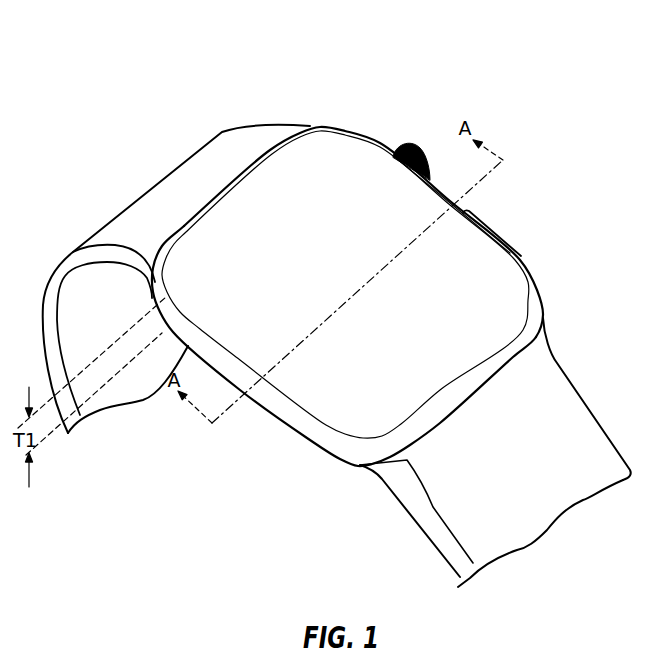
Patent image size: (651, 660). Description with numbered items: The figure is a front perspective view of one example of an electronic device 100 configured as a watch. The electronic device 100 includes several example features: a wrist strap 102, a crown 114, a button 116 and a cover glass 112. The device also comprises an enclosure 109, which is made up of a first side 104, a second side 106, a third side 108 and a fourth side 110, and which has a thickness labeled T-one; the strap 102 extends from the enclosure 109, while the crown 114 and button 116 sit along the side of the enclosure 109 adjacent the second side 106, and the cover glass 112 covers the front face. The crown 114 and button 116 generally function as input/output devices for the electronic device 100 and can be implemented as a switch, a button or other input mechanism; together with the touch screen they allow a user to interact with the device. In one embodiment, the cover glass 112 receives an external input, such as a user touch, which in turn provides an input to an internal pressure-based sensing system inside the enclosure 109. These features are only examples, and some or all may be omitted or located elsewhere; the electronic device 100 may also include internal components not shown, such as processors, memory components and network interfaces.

The electronic device 100 is at (337, 305).
The wrist strap 102 is at (263, 129).
The first side 104 is at (204, 193).
The second side 106 is at (451, 199).
The third side 108 is at (402, 458).
The enclosure 109 is at (544, 268).
The fourth side 110 is at (276, 412).
The cover glass 112 is at (347, 162).
The crown 114 is at (424, 153).
The button 116 is at (506, 238).